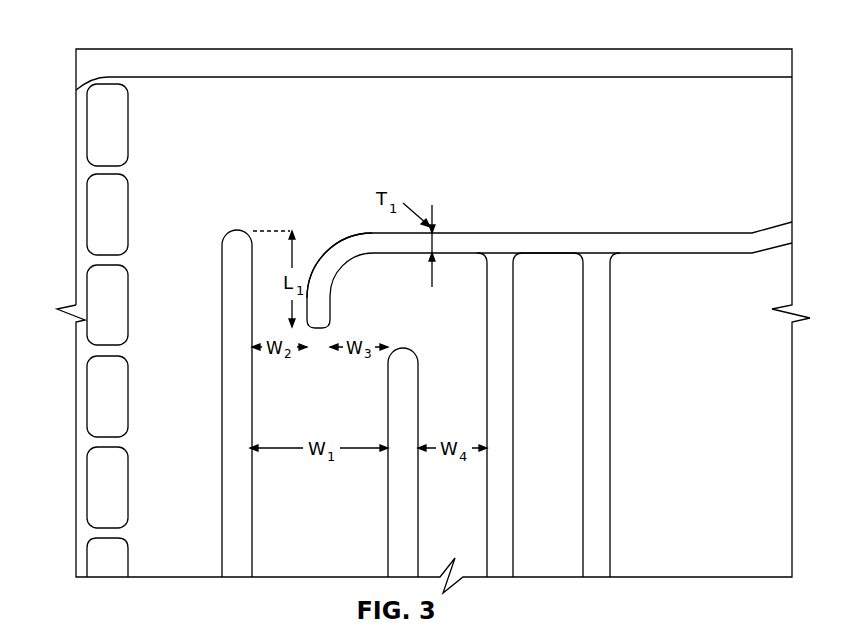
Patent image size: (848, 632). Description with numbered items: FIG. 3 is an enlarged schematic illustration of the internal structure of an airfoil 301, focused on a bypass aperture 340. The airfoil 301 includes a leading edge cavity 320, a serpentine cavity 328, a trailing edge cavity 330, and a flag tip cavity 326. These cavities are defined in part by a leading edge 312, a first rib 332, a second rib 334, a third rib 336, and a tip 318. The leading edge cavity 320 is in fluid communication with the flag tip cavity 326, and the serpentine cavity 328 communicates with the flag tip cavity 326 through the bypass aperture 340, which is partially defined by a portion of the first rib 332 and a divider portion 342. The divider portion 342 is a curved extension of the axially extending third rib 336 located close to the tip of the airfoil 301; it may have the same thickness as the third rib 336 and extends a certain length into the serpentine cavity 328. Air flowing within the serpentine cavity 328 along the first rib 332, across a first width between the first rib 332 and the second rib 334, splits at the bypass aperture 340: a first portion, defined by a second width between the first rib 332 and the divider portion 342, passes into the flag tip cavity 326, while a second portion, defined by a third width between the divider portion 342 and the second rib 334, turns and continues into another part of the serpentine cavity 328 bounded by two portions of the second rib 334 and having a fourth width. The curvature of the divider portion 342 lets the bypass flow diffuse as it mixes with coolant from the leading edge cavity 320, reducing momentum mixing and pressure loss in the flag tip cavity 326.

The airfoil 301 is at (116, 30).
The leading edge 312 is at (75, 277).
The tip 318 is at (513, 62).
The leading edge cavity 320 is at (152, 504).
The flag tip cavity 326 is at (487, 133).
The serpentine cavity 328 is at (299, 505).
The trailing edge cavity 330 is at (637, 300).
The first rib 332 is at (235, 360).
The second rib 334 is at (405, 501).
The third rib 336 is at (463, 237).
The bypass aperture 340 is at (277, 202).
The divider portion 342 is at (348, 258).